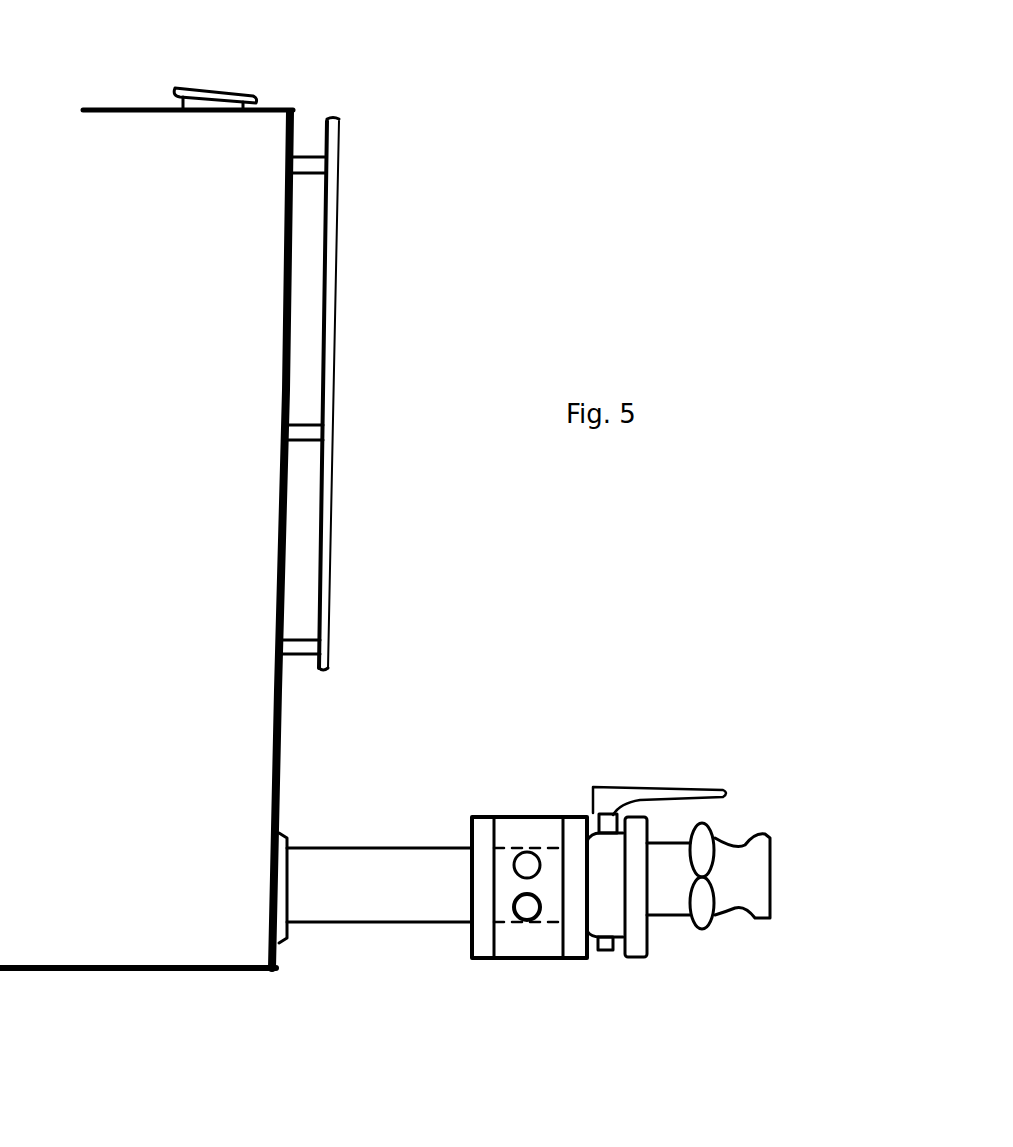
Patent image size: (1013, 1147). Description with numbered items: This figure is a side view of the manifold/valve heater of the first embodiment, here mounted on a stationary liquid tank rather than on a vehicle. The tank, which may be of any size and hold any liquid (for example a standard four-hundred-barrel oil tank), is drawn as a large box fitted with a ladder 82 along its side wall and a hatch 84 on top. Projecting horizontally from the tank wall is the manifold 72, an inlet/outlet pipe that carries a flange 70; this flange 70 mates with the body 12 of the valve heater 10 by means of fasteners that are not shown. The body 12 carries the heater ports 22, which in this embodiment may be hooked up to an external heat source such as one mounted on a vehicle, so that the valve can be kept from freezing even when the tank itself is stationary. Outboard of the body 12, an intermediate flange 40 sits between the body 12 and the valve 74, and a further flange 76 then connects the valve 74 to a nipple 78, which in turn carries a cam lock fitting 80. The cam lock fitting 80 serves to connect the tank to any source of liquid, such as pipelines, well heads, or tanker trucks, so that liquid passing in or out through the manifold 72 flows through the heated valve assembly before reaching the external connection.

The valve heater 10 is at (629, 854).
The body 12 is at (502, 838).
The heater ports 22 is at (524, 920).
The intermediate flange 40 is at (570, 817).
The flange 70 is at (467, 953).
The manifold 72 is at (332, 848).
The valve 74 is at (603, 950).
The flange 76 is at (633, 958).
The nipple 78 is at (662, 913).
The cam lock fitting 80 is at (747, 837).
The ladder 82 is at (333, 245).
The hatch 84 is at (208, 90).